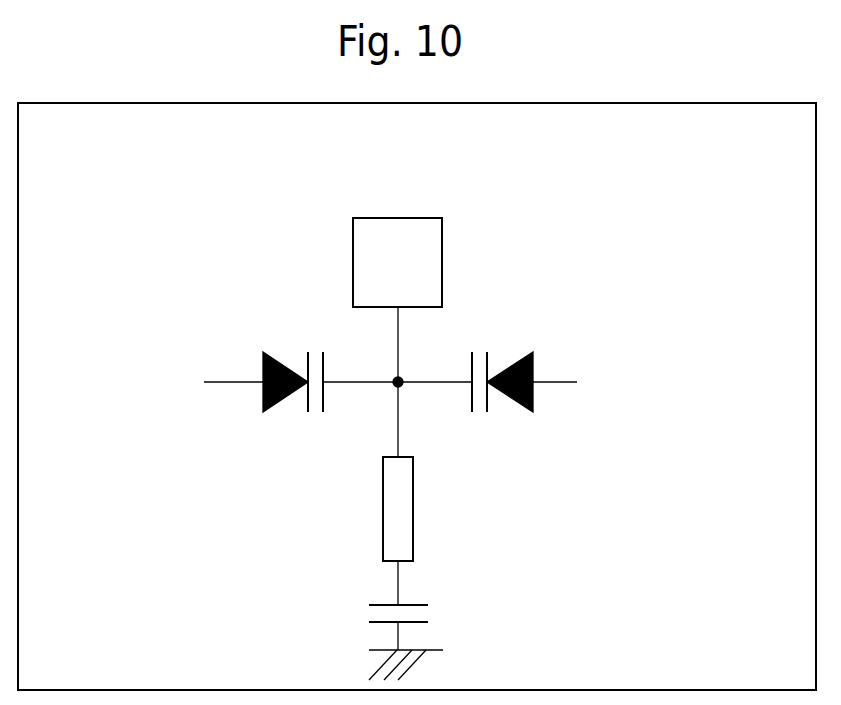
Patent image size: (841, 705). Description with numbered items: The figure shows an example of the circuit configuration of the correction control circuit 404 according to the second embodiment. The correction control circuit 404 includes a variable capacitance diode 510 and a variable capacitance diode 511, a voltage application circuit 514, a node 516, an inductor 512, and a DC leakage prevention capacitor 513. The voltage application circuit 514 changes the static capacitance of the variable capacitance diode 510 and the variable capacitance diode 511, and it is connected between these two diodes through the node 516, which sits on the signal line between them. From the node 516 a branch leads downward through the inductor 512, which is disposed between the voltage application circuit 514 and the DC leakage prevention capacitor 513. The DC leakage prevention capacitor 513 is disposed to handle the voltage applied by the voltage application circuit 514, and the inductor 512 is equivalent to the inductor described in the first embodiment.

The correction control circuit 404 is at (106, 182).
The voltage application circuit 514 is at (407, 218).
The variable capacitance diode 510 is at (306, 352).
The variable capacitance diode 511 is at (489, 354).
The node 516 is at (397, 362).
The inductor 512 is at (413, 505).
The DC leakage prevention capacitor 513 is at (420, 605).